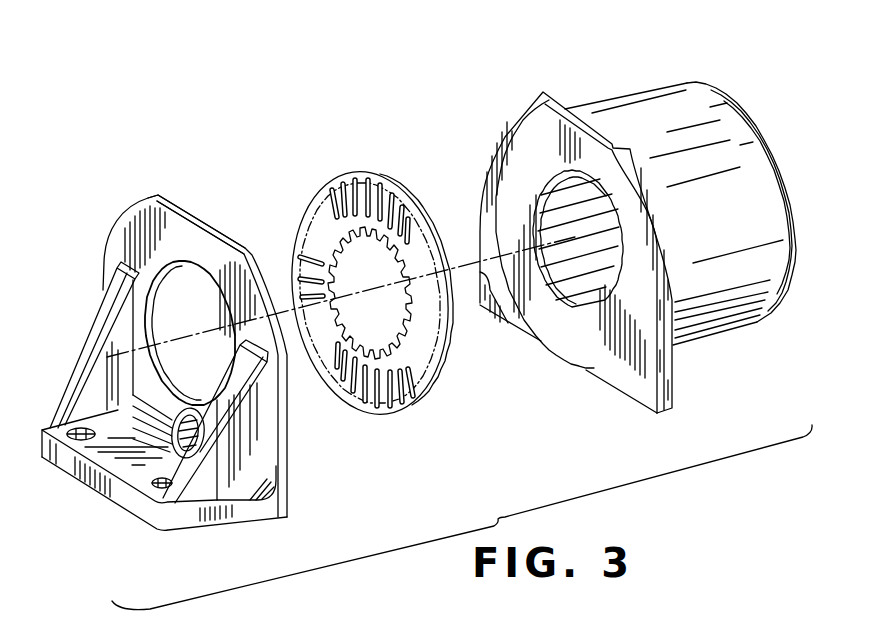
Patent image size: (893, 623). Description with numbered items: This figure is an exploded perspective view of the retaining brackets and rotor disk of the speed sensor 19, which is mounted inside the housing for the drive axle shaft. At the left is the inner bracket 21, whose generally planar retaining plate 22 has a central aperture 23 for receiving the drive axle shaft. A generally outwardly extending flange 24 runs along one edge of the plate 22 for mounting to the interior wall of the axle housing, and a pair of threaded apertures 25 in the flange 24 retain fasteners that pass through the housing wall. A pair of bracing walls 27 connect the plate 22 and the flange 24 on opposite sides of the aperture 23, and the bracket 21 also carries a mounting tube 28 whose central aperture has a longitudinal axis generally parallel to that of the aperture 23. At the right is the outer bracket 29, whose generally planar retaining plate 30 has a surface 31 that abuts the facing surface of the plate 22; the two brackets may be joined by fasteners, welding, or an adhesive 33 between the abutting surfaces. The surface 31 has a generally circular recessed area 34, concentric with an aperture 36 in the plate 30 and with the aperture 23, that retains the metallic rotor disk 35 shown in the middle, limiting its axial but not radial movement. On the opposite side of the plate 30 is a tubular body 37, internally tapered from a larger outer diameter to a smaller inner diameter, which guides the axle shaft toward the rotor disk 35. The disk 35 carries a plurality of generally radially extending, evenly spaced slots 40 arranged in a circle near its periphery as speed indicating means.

The speed sensor 19 is at (399, 91).
The inner bracket 21 is at (126, 213).
The retaining plate 22 is at (163, 212).
The central aperture 23 is at (152, 282).
The flange 24 is at (97, 487).
The apertures 25 is at (73, 437).
The bracing walls 27 is at (97, 328).
The mounting tube 28 is at (203, 408).
The outer bracket 29 is at (709, 182).
The retaining plate 30 is at (667, 385).
The surface 31 is at (625, 385).
The adhesive 33 is at (485, 312).
The recessed area 34 is at (572, 347).
The rotor disk 35 is at (357, 292).
The aperture 36 is at (550, 276).
The tubular body 37 is at (783, 242).
The slots 40 is at (305, 256).